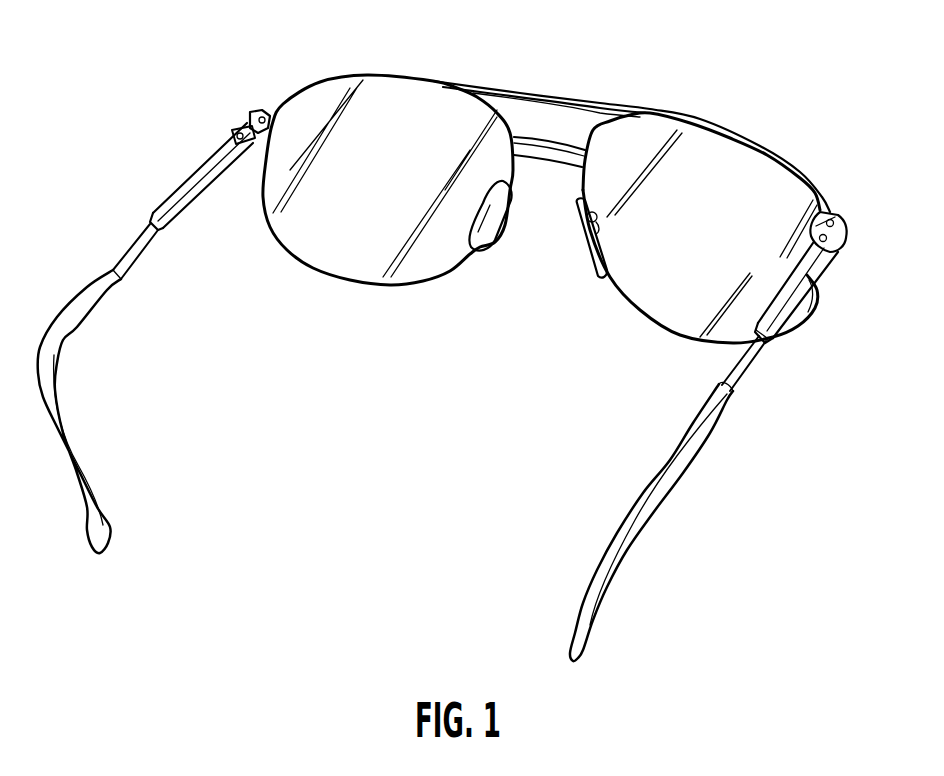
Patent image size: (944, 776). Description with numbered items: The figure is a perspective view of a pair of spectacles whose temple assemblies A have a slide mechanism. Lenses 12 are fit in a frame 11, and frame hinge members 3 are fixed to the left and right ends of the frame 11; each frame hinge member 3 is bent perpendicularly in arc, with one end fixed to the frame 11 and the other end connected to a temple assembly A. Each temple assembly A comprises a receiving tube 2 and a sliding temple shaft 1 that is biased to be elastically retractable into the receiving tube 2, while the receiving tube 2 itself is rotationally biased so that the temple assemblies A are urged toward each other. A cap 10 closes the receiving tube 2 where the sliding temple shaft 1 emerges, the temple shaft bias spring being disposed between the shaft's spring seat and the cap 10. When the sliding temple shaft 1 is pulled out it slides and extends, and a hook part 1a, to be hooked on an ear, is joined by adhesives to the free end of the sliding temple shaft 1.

The lens 12 is at (398, 171).
The frame 11 is at (448, 83).
The frame hinge member 3 is at (847, 234).
The receiving tube 2 is at (786, 283).
The cap 10 is at (764, 344).
The sliding temple shaft 1 is at (742, 360).
The hook part 1a is at (646, 481).
The temple assembly A is at (438, 385).